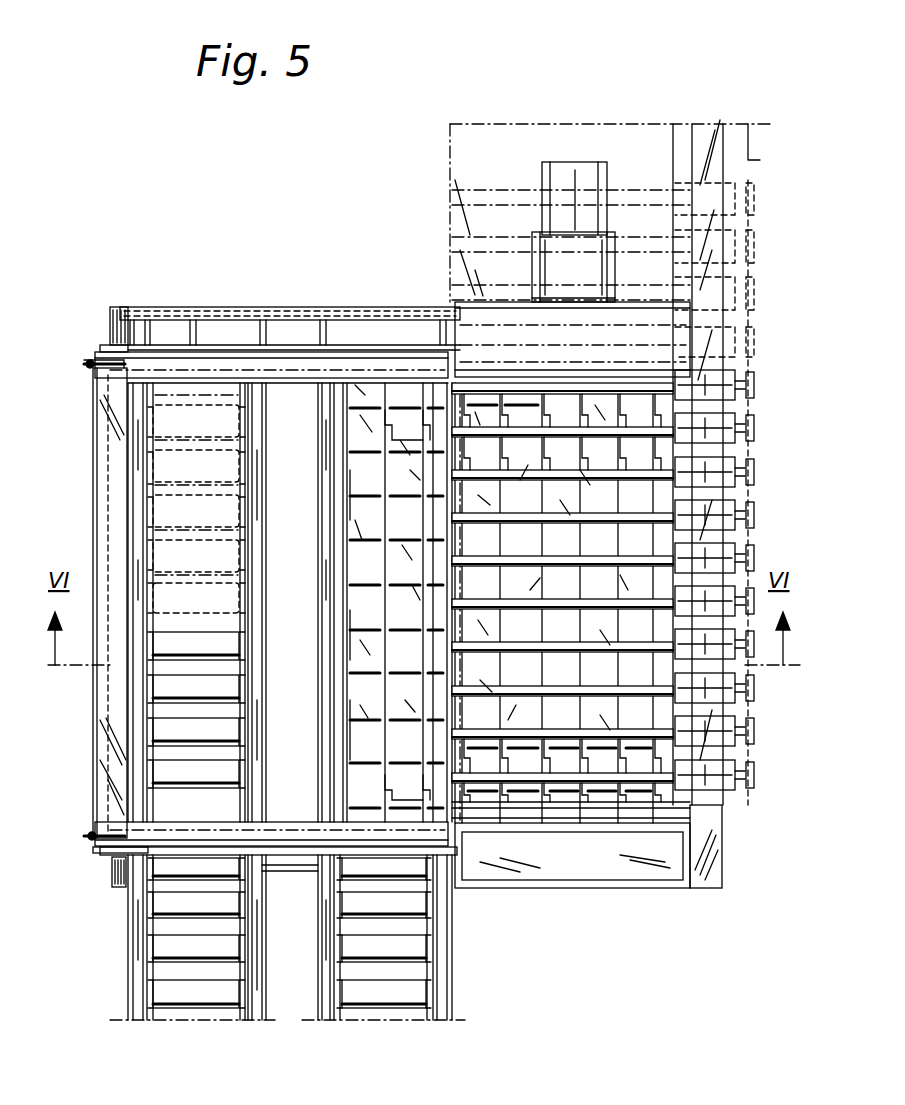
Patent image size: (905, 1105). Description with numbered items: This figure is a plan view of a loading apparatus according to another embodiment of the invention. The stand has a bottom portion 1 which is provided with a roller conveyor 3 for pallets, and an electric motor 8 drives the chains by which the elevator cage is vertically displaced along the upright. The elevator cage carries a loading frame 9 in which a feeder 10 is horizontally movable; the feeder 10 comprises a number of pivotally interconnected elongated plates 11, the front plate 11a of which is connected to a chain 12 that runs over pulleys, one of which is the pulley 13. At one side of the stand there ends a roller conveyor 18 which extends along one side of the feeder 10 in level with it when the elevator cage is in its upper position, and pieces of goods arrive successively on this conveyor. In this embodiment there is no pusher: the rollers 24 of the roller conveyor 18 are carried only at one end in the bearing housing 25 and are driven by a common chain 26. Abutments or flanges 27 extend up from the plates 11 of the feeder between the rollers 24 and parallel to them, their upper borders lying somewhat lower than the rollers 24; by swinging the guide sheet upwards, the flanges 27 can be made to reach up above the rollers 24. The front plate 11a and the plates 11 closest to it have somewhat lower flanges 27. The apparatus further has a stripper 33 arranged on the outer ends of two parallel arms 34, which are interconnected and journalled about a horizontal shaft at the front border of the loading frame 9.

The bottom portion 1 is at (115, 888).
The roller conveyor 3 is at (452, 948).
The electric motor 8 is at (580, 178).
The loading frame 9 is at (106, 757).
The feeder 10 is at (550, 800).
The elongated plates 11 is at (478, 770).
The front plate 11a is at (358, 390).
The chain 12 is at (182, 368).
The pulley 13 is at (88, 360).
The roller conveyor 18 is at (640, 168).
The rollers 24 is at (478, 292).
The bearing housing 25 is at (752, 245).
The common chain 26 is at (752, 160).
The flanges 27 is at (395, 662).
The stripper 33 is at (444, 468).
The parallel arms 34 is at (282, 345).